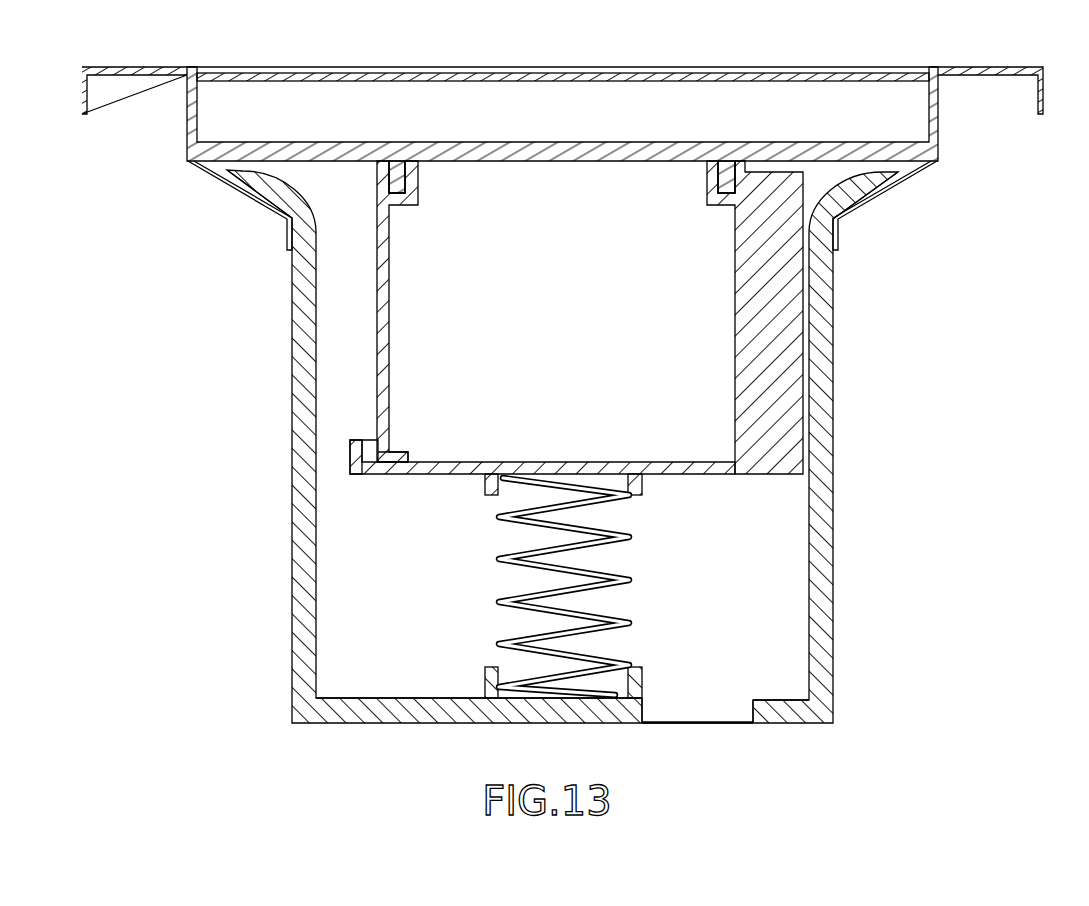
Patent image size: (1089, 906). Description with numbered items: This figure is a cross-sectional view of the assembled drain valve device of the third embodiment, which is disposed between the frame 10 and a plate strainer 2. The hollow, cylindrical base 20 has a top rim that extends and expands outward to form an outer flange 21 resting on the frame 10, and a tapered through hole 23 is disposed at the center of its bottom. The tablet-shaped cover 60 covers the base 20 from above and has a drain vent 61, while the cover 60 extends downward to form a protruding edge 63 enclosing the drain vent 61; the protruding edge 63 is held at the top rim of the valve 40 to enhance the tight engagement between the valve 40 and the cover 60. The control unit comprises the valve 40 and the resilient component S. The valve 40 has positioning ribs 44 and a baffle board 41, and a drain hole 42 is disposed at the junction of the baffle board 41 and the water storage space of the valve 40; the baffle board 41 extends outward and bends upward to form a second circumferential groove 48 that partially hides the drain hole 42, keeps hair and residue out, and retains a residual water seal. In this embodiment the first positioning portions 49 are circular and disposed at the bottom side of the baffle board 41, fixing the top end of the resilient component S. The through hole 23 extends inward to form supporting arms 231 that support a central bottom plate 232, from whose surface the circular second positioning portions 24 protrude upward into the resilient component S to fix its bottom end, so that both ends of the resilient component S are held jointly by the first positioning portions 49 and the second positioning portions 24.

The plate strainer 2 is at (680, 74).
The frame 10 is at (1002, 72).
The base 20 is at (300, 270).
The outer flange 21 is at (265, 186).
The through hole 23 is at (737, 715).
The second positioning portions 24 is at (637, 683).
The valve 40 is at (380, 313).
The baffle board 41 is at (660, 470).
The drain hole 42 is at (383, 450).
The positioning ribs 44 is at (778, 293).
The second circumferential groove 48 is at (360, 452).
The first positioning portions 49 is at (637, 487).
The cover 60 is at (834, 150).
The drain vent 61 is at (405, 180).
The protruding edge 63 is at (397, 178).
The supporting arms 231 is at (358, 715).
The central bottom plate 232 is at (660, 722).
The resilient component S is at (630, 582).